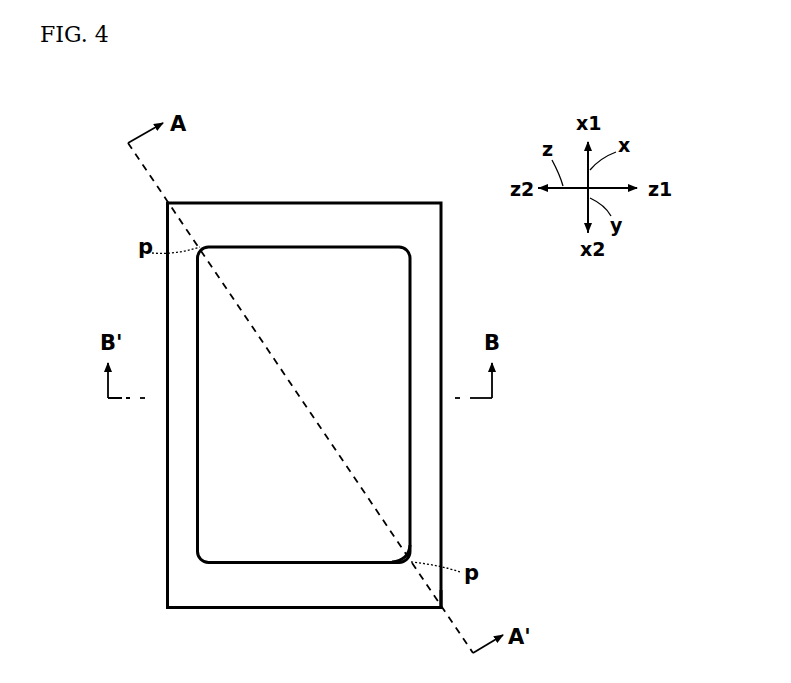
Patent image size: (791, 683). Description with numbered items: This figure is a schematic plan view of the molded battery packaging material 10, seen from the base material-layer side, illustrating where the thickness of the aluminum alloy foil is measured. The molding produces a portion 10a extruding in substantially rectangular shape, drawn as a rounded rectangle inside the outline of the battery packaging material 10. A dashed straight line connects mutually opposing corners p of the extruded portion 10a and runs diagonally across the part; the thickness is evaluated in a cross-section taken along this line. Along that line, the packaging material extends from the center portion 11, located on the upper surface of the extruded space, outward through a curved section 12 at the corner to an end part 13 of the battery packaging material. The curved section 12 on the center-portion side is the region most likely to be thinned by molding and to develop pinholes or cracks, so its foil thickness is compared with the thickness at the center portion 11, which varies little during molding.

The battery packaging material 10 is at (274, 184).
The portion extruding in substantially rectangular shape 10a is at (378, 326).
The center portion 11 is at (298, 398).
The curved section 12 is at (408, 566).
The end part 13 is at (440, 609).